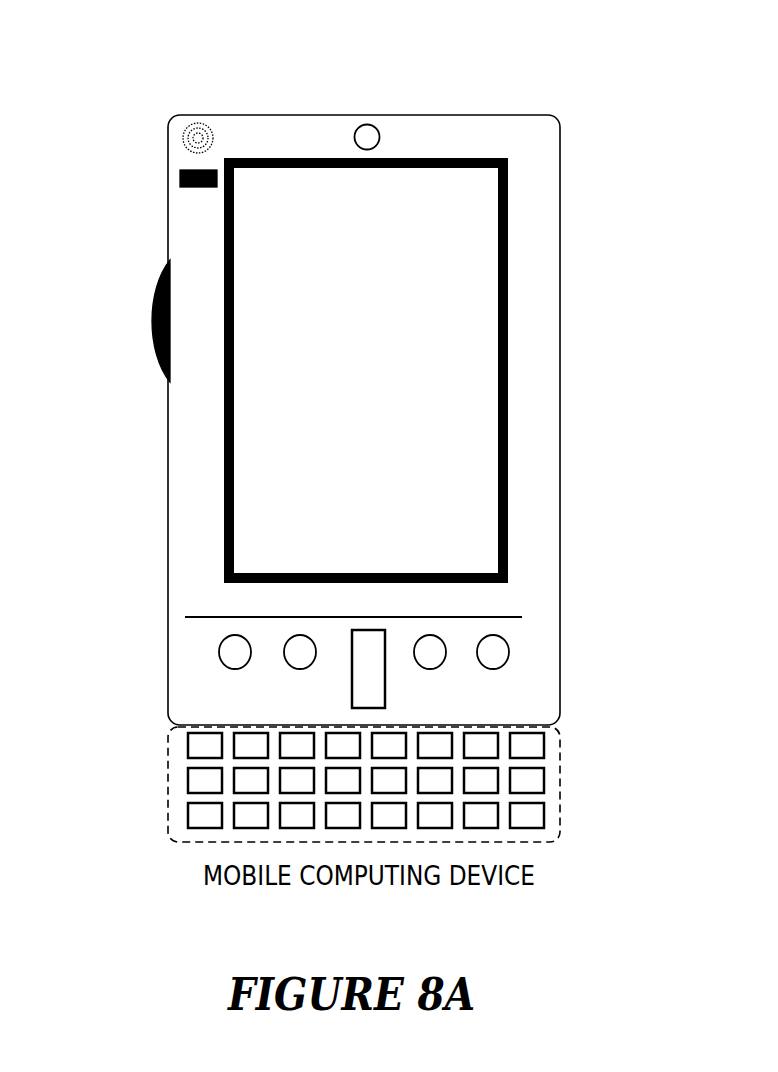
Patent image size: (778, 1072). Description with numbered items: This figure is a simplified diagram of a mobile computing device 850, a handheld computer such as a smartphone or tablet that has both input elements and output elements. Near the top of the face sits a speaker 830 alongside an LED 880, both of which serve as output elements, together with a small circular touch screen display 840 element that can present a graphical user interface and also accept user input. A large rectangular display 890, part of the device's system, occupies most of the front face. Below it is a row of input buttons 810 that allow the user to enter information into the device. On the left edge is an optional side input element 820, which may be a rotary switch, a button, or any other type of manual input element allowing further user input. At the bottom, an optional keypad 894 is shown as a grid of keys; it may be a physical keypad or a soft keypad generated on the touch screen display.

The input buttons 810 is at (498, 662).
The side input element 820 is at (148, 328).
The speaker 830 is at (185, 134).
The touch screen display 840 is at (378, 130).
The mobile computing device 850 is at (560, 132).
The LED 880 is at (180, 176).
The display 890 is at (250, 520).
The keypad 894 is at (168, 808).